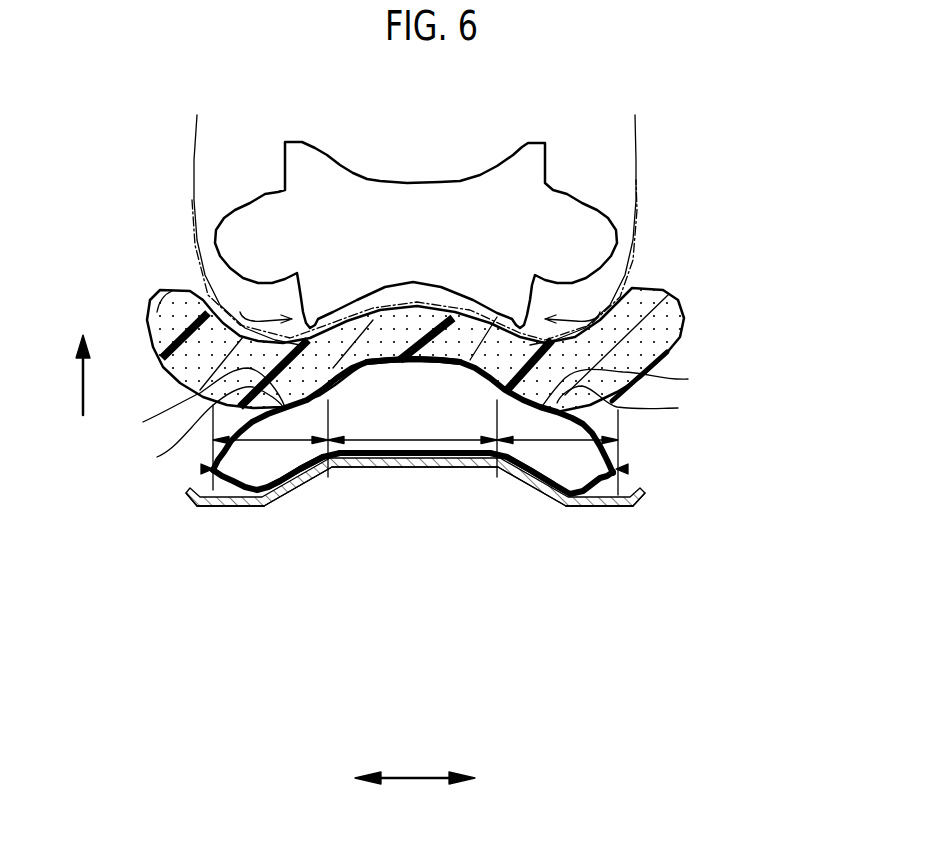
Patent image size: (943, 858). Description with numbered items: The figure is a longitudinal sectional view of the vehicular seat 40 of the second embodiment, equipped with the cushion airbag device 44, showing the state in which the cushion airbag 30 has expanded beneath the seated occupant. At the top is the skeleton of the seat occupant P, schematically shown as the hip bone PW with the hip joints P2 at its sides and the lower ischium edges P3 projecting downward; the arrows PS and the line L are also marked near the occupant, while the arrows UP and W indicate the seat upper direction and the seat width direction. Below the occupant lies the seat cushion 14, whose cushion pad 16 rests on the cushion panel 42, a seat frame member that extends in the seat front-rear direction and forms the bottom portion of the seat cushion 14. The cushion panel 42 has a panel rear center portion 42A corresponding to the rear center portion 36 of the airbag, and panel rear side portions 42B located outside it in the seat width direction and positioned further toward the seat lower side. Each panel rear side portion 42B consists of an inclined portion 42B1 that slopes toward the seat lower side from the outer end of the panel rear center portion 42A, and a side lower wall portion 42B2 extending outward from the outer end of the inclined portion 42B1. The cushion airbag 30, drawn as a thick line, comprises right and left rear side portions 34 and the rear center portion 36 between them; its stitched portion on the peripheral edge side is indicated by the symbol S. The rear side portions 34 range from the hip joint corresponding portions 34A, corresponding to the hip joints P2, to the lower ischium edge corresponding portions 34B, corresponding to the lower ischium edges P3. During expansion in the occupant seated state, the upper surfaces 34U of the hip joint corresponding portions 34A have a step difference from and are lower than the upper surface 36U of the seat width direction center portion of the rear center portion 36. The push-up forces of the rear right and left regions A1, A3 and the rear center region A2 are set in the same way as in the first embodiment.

The seat cushion 14 is at (728, 293).
The cushion pad 16 is at (667, 337).
The cushion airbag 30 is at (627, 454).
The rear side portions 34 is at (288, 492).
The hip joint corresponding portions 34A is at (417, 404).
The lower ischium edge corresponding portions 34B is at (302, 481).
The upper surfaces of the hip joint corresponding portions 34U is at (418, 431).
The rear center portion 36 is at (417, 458).
The upper surface of the rear center portion 36U is at (400, 360).
The vehicular seat 40 is at (739, 492).
The cushion panel 42 is at (469, 484).
The panel rear center portion 42A is at (380, 468).
The panel rear side portions 42B is at (343, 609).
The inclined portion 42B1 is at (293, 488).
The side lower wall portion 42B2 is at (219, 508).
The cushion airbag device 44 is at (717, 444).
The rear right and left region A1 is at (265, 441).
The rear center region A2 is at (416, 439).
The rear right and left region A3 is at (571, 442).
The seat occupant P is at (645, 145).
The hip bone PW is at (475, 162).
The hip joints P2 is at (237, 240).
The lower ischium edges P3 is at (305, 322).
The pressure direction PS is at (416, 303).
The reference line L is at (643, 207).
The stitched portion S is at (205, 468).
The upward direction UP is at (82, 360).
The width direction W is at (413, 766).